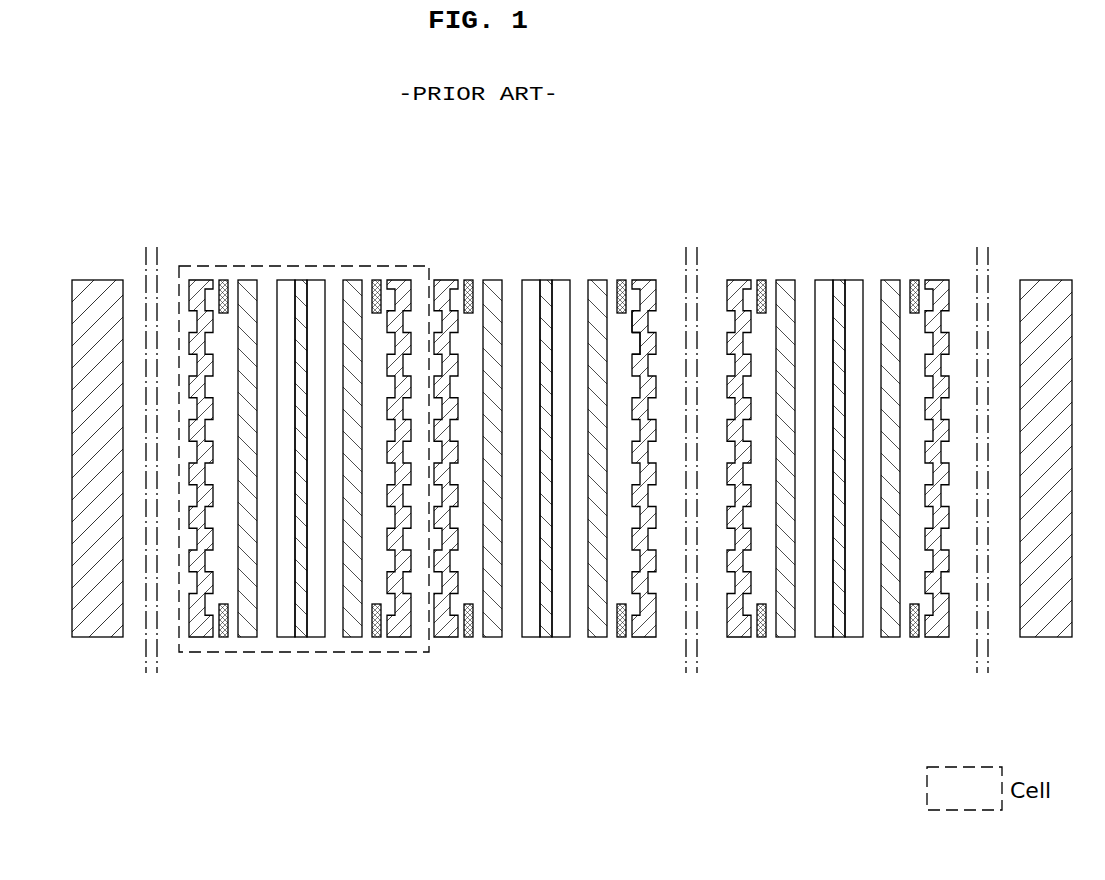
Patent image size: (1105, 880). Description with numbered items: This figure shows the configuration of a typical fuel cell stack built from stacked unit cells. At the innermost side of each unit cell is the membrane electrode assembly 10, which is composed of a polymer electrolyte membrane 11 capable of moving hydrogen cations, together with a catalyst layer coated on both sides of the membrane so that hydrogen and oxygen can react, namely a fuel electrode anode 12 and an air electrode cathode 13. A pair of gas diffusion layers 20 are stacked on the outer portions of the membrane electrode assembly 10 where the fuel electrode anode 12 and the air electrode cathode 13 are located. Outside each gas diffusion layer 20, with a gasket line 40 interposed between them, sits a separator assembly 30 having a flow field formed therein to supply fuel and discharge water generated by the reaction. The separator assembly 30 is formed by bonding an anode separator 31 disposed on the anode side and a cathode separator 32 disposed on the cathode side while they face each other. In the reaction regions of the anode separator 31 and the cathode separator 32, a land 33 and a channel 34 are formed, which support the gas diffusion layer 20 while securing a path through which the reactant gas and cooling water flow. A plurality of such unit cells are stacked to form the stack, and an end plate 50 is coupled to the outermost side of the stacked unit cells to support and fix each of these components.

The membrane electrode assembly 10 is at (552, 536).
The polymer electrolyte membrane 11 is at (301, 638).
The fuel electrode anode 12 is at (316, 638).
The air electrode cathode 13 is at (285, 638).
The gas diffusion layer 20 is at (248, 638).
The separator assembly 30 is at (559, 501).
The anode separator 31 is at (200, 638).
The cathode separator 32 is at (400, 638).
The land 33 is at (633, 333).
The channel 34 is at (638, 316).
The gasket line 40 is at (224, 281).
The end plate 50 is at (96, 620).